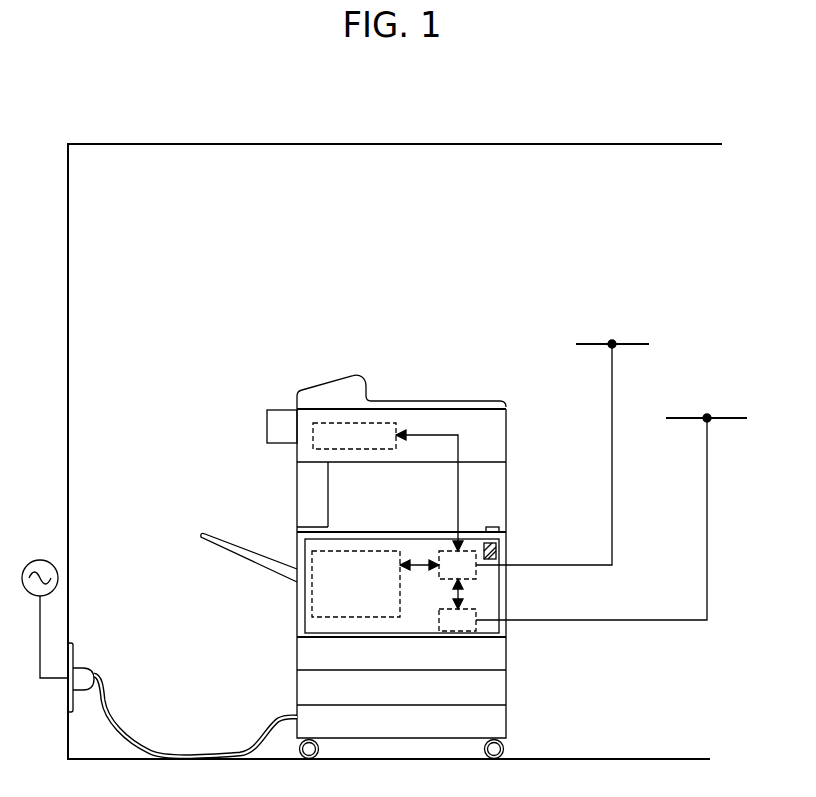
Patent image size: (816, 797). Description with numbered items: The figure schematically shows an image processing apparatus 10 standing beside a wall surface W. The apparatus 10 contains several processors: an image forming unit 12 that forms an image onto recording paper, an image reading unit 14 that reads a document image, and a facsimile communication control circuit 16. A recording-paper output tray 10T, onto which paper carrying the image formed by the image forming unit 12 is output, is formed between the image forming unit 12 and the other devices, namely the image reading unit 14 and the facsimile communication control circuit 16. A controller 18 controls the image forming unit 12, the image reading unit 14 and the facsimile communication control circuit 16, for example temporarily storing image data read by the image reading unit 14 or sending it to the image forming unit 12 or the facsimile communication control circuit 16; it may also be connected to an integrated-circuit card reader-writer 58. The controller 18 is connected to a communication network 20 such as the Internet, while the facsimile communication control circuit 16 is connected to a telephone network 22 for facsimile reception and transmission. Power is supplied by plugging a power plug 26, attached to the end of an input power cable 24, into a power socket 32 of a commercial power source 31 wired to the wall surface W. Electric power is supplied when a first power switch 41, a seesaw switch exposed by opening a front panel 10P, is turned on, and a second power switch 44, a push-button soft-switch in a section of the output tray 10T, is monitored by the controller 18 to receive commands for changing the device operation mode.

The wall surface W is at (68, 387).
The image processing apparatus 10 is at (316, 374).
The recording-paper output tray 10T is at (340, 531).
The front panel 10P is at (305, 607).
The image forming unit 12 is at (318, 634).
The image reading unit 14 is at (313, 449).
The integrated-circuit card reader-writer 58 is at (269, 418).
The controller 18 is at (476, 579).
The facsimile communication control circuit 16 is at (476, 609).
The first power switch 41 is at (498, 553).
The second power switch 44 is at (493, 526).
The communication network 20 is at (636, 344).
The telephone network 22 is at (735, 418).
The commercial power source 31 is at (40, 560).
The power socket 32 is at (73, 646).
The power plug 26 is at (92, 669).
The input power cable 24 is at (120, 735).